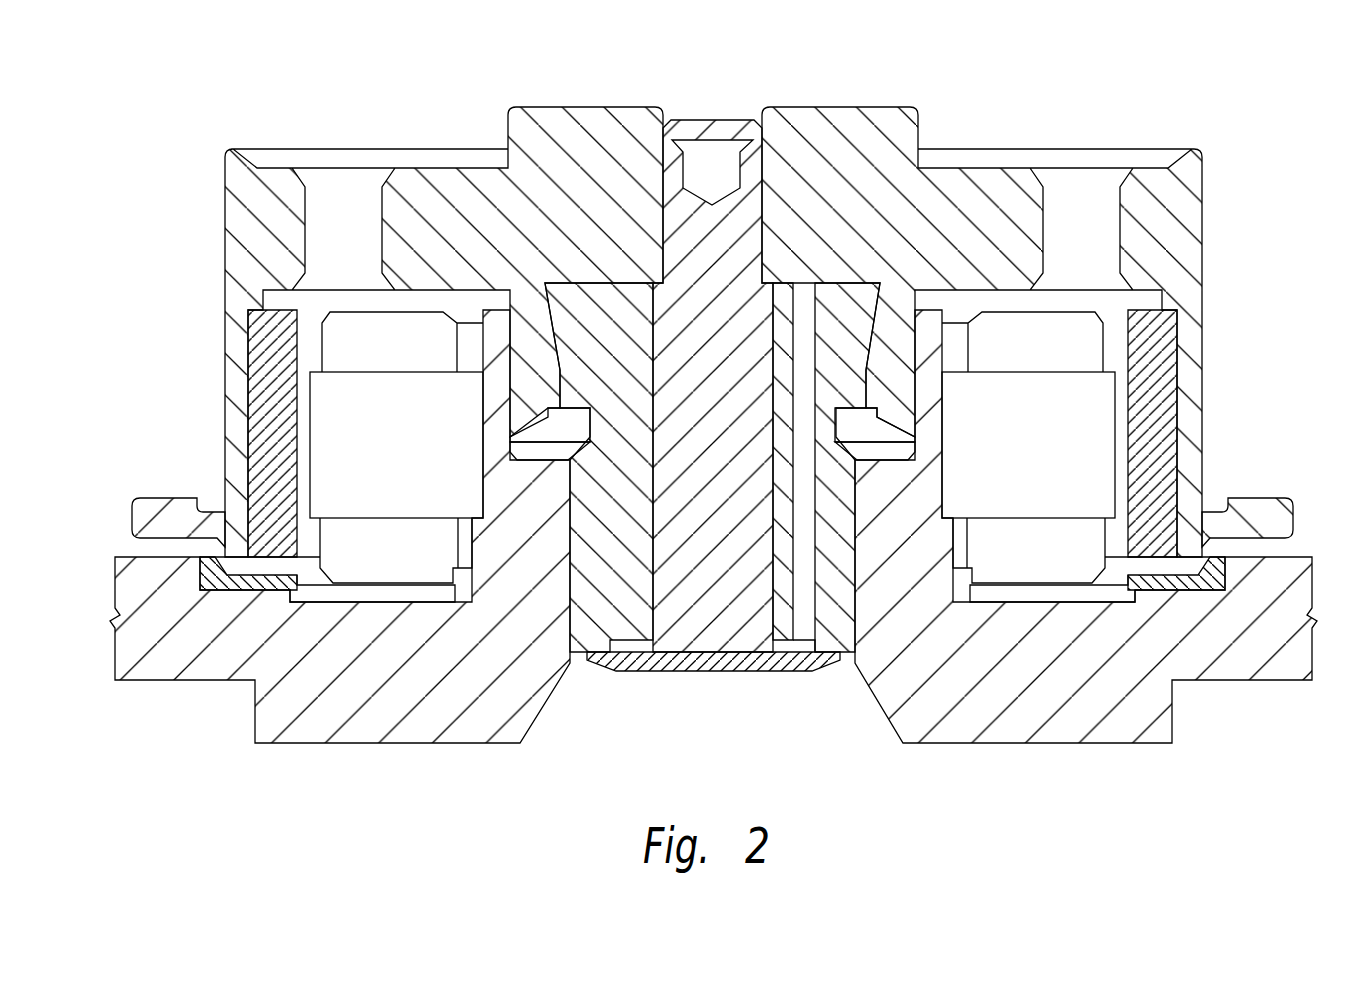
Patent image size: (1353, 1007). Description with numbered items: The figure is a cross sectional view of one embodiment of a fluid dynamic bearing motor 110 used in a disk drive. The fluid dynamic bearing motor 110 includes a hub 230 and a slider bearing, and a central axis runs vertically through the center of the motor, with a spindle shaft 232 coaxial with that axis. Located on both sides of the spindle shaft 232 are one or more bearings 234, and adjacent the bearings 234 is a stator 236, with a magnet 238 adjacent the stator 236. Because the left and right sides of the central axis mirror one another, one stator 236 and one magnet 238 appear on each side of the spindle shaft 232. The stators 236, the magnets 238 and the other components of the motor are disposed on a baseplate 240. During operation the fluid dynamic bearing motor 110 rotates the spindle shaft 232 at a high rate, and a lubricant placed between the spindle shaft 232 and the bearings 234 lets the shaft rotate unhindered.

The fluid dynamic bearing motor 110 is at (1193, 80).
The hub 230 is at (1197, 213).
The spindle shaft 232 is at (679, 148).
The bearings 234 is at (783, 290).
The stator 236 is at (1090, 408).
The magnet 238 is at (1165, 444).
The baseplate 240 is at (1238, 668).